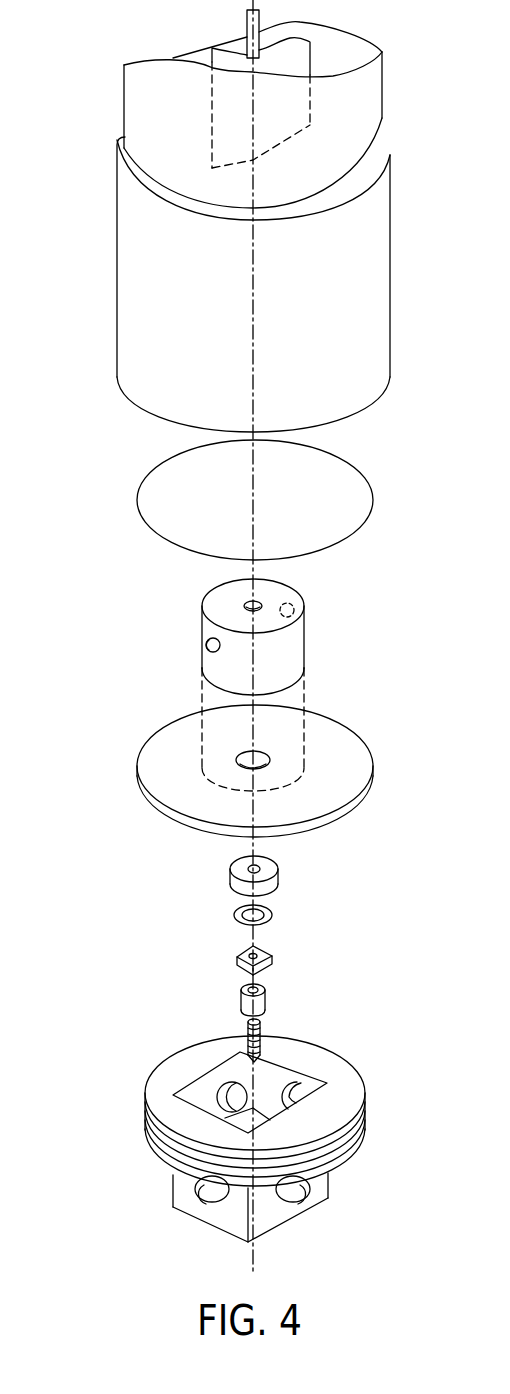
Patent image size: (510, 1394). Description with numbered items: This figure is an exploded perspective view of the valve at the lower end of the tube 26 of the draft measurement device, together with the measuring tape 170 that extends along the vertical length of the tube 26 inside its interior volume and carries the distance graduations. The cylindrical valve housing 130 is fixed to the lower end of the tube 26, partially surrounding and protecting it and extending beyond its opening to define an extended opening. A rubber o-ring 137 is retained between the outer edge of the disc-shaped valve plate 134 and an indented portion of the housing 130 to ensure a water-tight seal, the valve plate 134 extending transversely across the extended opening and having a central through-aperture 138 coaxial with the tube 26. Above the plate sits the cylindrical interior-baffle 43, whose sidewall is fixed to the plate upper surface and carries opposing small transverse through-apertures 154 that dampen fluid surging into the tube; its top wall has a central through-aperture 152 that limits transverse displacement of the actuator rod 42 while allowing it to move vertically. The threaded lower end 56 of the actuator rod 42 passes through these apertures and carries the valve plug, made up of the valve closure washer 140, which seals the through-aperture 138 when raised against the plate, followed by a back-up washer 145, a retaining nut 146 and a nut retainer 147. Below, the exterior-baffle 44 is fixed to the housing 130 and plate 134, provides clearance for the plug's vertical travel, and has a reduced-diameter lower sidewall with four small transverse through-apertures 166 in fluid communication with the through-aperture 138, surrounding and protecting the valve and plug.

The actuator rod 42 is at (247, 43).
The measuring tape 170 is at (305, 53).
The tube 26 is at (124, 103).
The valve housing 130 is at (117, 307).
The o-ring 137 is at (150, 468).
The interior-baffle 43 is at (202, 613).
The central through-aperture 152 is at (263, 603).
The transverse through-apertures 154 is at (207, 652).
The valve plate 134 is at (140, 748).
The through-aperture 138 is at (263, 752).
The valve closure washer 140 is at (230, 878).
The back-up washer 145 is at (233, 917).
The retaining nut 146 is at (237, 960).
The nut retainer 147 is at (242, 1000).
The threaded lower end 56 is at (247, 1043).
The exterior-baffle 44 is at (145, 1118).
The transverse through-apertures 166 is at (210, 1195).